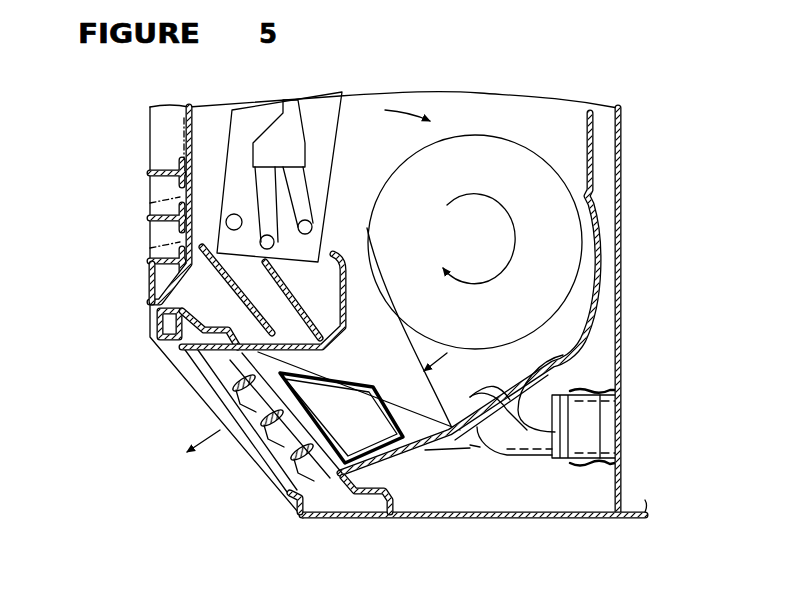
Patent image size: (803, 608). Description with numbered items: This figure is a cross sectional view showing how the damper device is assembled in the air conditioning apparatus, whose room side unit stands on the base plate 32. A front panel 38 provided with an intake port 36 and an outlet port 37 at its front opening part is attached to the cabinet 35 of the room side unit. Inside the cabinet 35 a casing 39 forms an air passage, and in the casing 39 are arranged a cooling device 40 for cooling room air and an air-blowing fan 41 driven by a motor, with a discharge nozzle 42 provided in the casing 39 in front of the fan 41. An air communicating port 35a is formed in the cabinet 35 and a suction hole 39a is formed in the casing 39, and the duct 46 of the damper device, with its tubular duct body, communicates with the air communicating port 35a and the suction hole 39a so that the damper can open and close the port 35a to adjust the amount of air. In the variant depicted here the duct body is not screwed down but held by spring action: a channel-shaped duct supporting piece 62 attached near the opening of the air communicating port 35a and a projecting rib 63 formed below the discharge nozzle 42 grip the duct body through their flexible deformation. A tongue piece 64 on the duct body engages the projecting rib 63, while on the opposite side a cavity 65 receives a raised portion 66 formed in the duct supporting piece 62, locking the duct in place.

The base plate 32 is at (585, 518).
The cabinet 35 is at (619, 397).
The air communicating port 35a is at (620, 427).
The intake port 36 is at (160, 178).
The outlet port 37 is at (197, 380).
The front panel 38 is at (150, 263).
The casing 39 is at (597, 303).
The suction hole 39a is at (555, 352).
The cooling device 40 is at (226, 170).
The air-blowing fan 41 is at (570, 280).
The discharge nozzle 42 is at (150, 290).
The duct 46 is at (524, 466).
The duct supporting piece 62 is at (622, 490).
The projecting rib 63 is at (440, 450).
The tongue piece 64 is at (477, 447).
The cavity 65 is at (593, 388).
The raised portion 66 is at (597, 452).